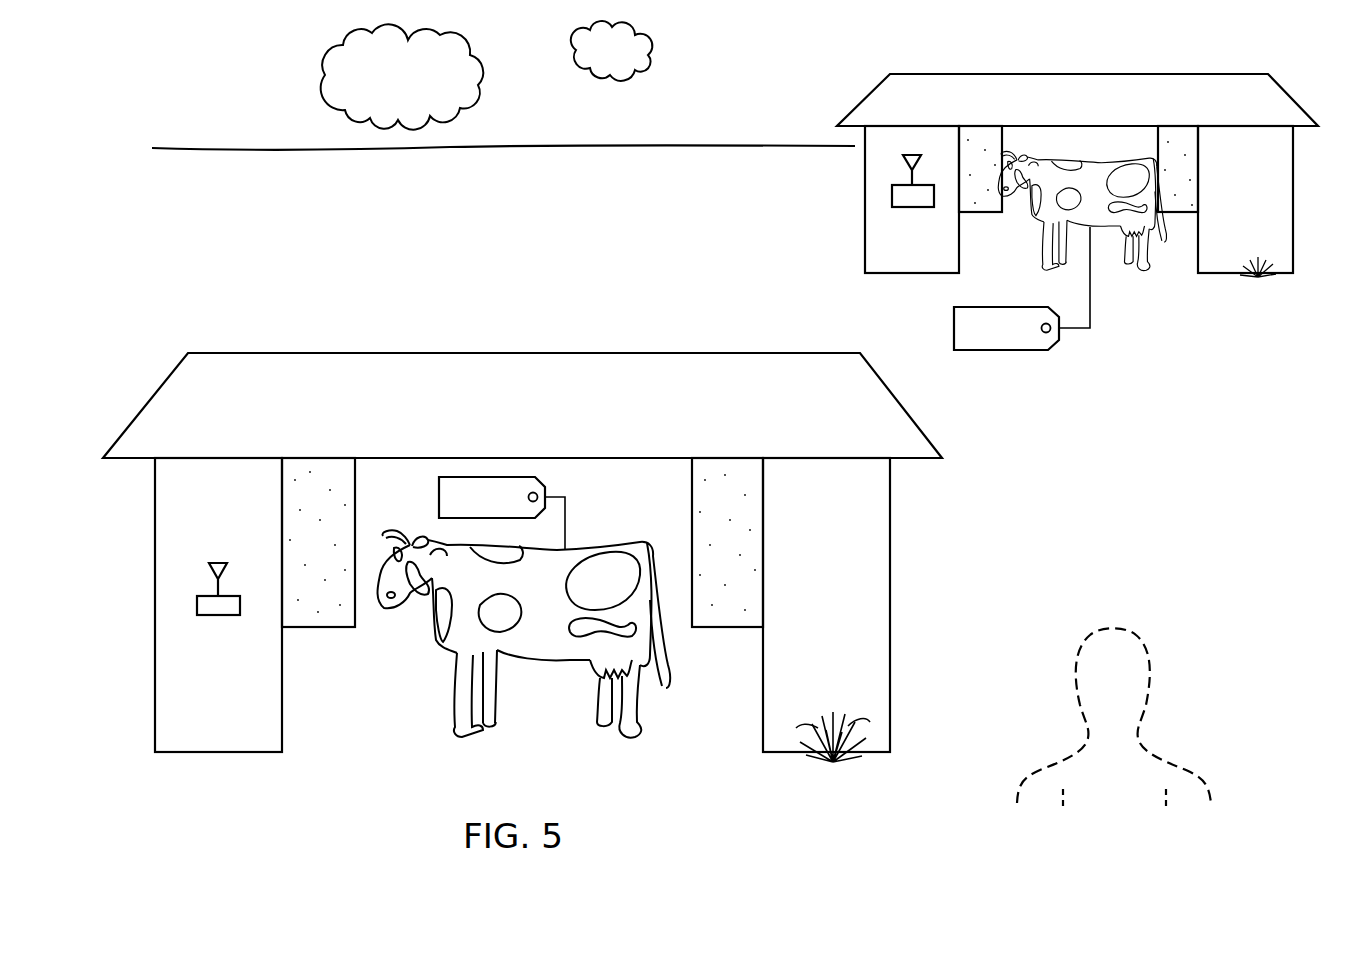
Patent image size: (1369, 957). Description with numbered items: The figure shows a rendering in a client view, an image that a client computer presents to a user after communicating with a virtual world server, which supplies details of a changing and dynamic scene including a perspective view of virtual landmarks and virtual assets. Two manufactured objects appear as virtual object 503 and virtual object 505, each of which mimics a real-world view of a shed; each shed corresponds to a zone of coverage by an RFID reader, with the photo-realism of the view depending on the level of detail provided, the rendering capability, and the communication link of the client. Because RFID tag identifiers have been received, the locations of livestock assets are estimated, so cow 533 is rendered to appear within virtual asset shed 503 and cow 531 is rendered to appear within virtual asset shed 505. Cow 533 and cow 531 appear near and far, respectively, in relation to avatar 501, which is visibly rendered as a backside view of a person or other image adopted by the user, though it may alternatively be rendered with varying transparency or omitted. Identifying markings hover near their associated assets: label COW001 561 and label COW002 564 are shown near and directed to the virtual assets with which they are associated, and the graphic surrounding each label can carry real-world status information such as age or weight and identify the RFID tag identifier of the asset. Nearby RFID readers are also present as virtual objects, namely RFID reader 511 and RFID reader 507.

The avatar 501 is at (1173, 757).
The virtual object 503 is at (540, 421).
The virtual object 505 is at (1097, 115).
The RFID reader 507 is at (907, 208).
The RFID reader 511 is at (208, 617).
The cow 531 is at (1040, 213).
The cow 533 is at (617, 542).
The label COW001 561 is at (953, 328).
The label COW002 564 is at (438, 496).